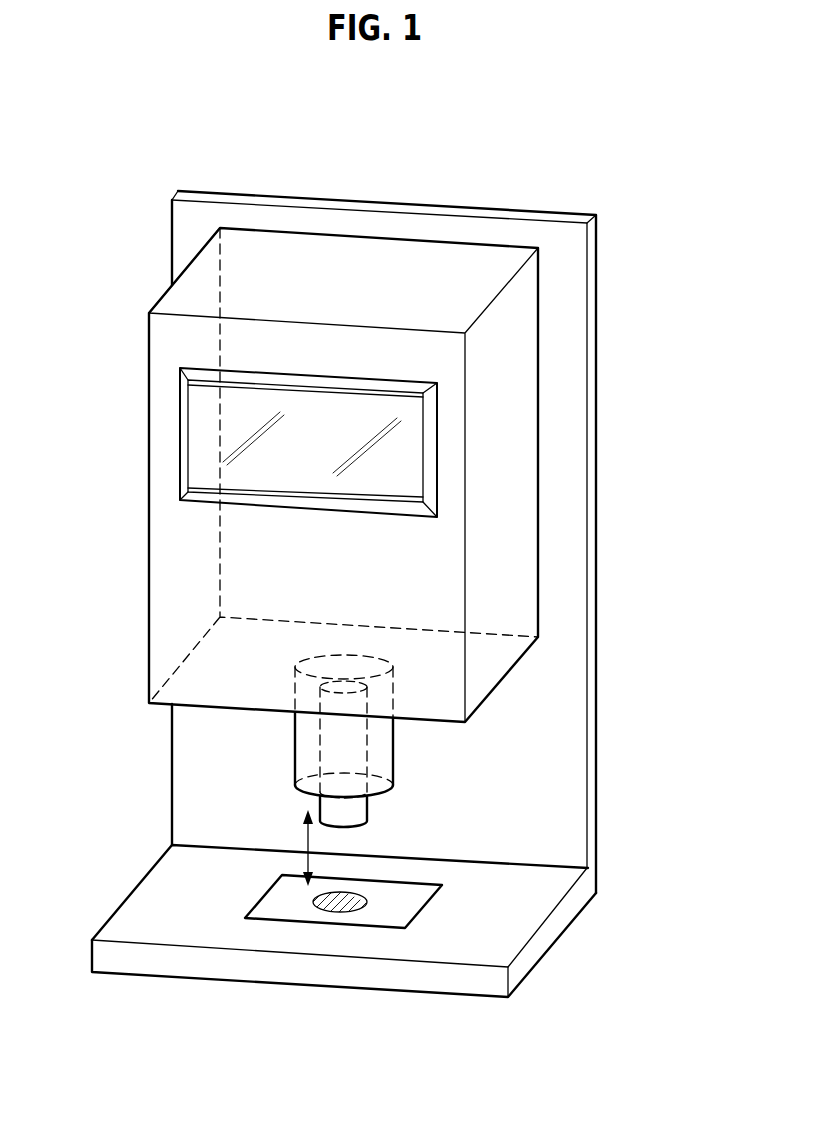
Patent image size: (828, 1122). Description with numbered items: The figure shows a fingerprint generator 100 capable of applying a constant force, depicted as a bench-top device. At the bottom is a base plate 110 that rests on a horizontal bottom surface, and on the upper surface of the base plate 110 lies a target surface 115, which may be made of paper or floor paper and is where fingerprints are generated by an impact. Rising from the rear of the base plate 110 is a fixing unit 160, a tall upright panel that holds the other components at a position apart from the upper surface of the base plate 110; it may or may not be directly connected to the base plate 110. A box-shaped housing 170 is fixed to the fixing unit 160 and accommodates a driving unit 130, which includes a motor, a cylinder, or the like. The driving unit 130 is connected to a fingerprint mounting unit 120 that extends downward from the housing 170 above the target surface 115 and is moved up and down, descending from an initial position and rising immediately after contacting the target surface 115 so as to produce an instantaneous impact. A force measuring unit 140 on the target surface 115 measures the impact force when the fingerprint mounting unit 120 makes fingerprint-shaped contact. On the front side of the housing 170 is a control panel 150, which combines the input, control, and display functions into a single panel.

The fingerprint generator 100 is at (463, 148).
The base plate 110 is at (125, 910).
The target surface 115 is at (388, 917).
The fingerprint mounting unit 120 is at (367, 813).
The driving unit 130 is at (295, 748).
The force measuring unit 140 is at (330, 904).
The control panel 150 is at (203, 448).
The fixing unit 160 is at (596, 520).
The housing 170 is at (148, 358).